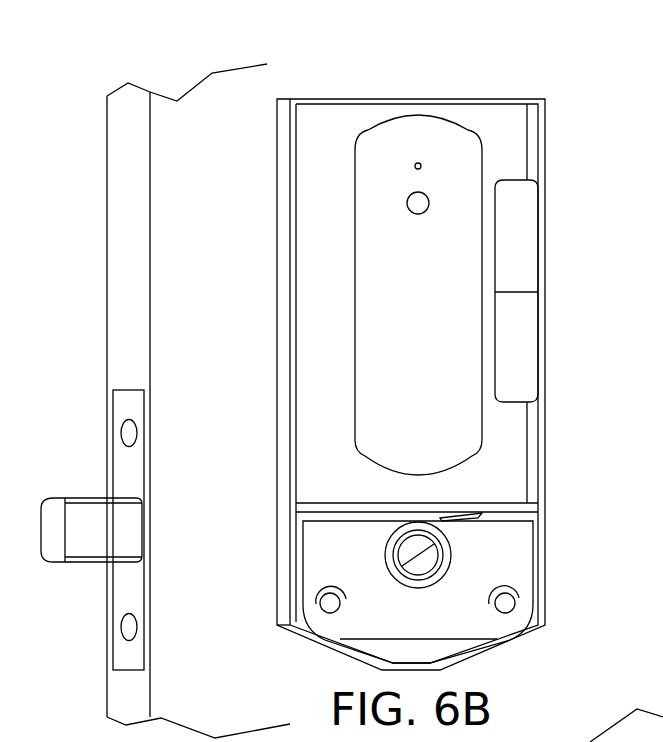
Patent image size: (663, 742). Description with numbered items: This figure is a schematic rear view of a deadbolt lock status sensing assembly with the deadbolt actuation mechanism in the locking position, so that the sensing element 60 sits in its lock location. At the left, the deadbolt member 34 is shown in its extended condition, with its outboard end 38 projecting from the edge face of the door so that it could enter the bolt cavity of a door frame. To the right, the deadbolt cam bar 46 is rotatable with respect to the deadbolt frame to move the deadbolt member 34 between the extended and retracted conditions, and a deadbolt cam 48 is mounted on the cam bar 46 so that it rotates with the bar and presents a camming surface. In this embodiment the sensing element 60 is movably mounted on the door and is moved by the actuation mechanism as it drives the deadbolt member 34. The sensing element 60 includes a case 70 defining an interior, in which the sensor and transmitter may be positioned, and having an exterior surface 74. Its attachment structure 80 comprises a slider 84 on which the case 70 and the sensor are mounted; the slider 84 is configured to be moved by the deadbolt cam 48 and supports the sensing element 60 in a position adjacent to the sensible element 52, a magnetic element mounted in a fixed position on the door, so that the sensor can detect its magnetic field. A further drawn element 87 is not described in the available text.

The deadbolt member 34 is at (104, 545).
The outboard end 38 is at (52, 517).
The deadbolt cam bar 46 is at (413, 545).
The deadbolt cam 48 is at (443, 519).
The sensible element 52 is at (517, 203).
The sensing element 60 is at (467, 183).
The case 70 is at (395, 137).
The exterior surface 74 is at (422, 134).
The attachment structure 80 is at (503, 92).
The slider 84 is at (348, 512).
The wire 87 is at (483, 470).